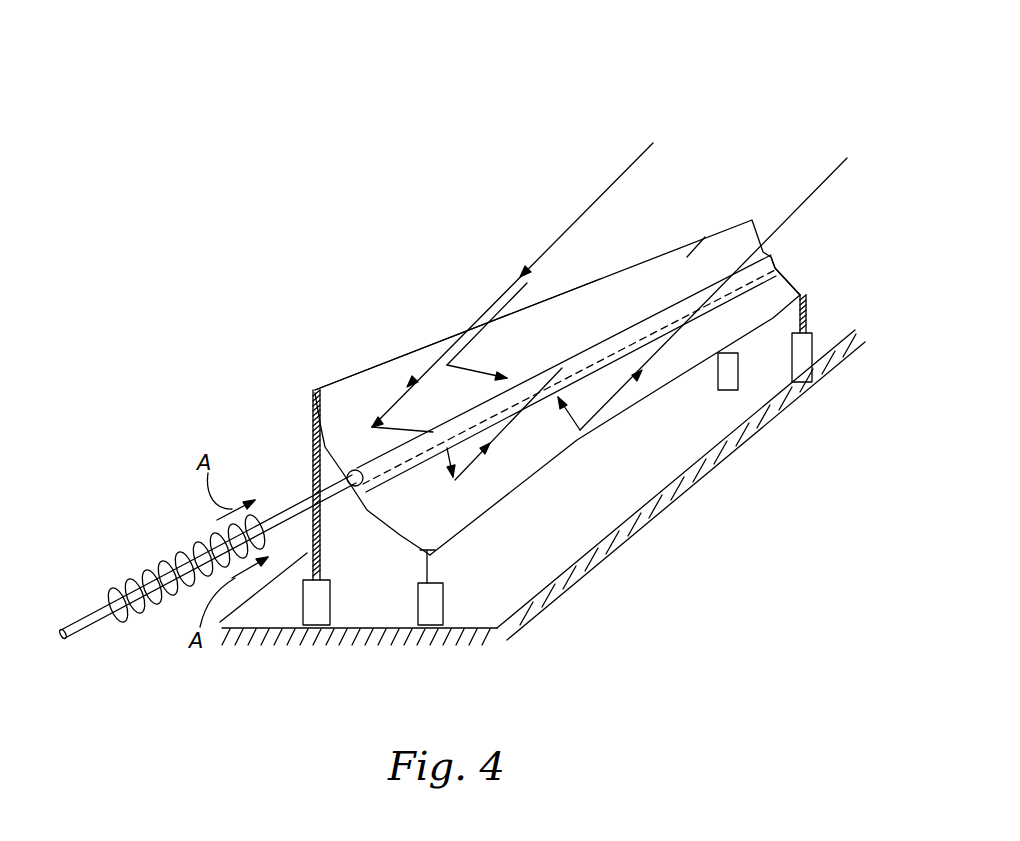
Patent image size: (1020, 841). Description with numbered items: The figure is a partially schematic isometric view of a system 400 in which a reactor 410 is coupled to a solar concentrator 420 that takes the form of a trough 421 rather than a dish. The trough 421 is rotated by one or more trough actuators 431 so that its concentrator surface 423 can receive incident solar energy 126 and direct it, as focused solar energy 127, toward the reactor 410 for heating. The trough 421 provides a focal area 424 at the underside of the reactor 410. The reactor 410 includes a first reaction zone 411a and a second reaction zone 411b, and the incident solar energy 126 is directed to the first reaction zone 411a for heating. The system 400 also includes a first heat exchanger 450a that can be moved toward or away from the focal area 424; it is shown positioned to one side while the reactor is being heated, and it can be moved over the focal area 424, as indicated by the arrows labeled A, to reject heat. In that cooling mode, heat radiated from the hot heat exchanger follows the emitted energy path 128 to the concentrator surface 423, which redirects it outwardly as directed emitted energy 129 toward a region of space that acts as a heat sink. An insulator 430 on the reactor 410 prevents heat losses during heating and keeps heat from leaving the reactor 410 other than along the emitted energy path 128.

The system 400 is at (272, 82).
The incident solar energy 126 is at (600, 192).
The focused solar energy 127 is at (473, 370).
The emitted energy path 128 is at (345, 474).
The directed emitted energy 129 is at (410, 383).
The reactor 410 is at (722, 437).
The first reaction zone 411a is at (597, 318).
The second reaction zone 411b is at (80, 563).
The solar concentrator 420 is at (275, 391).
The trough 421 is at (335, 382).
The concentrator surface 423 is at (690, 255).
The focal area 424 is at (808, 298).
The insulator 430 is at (520, 398).
The trough actuators 431 is at (302, 600).
The first heat exchanger 450a is at (147, 567).